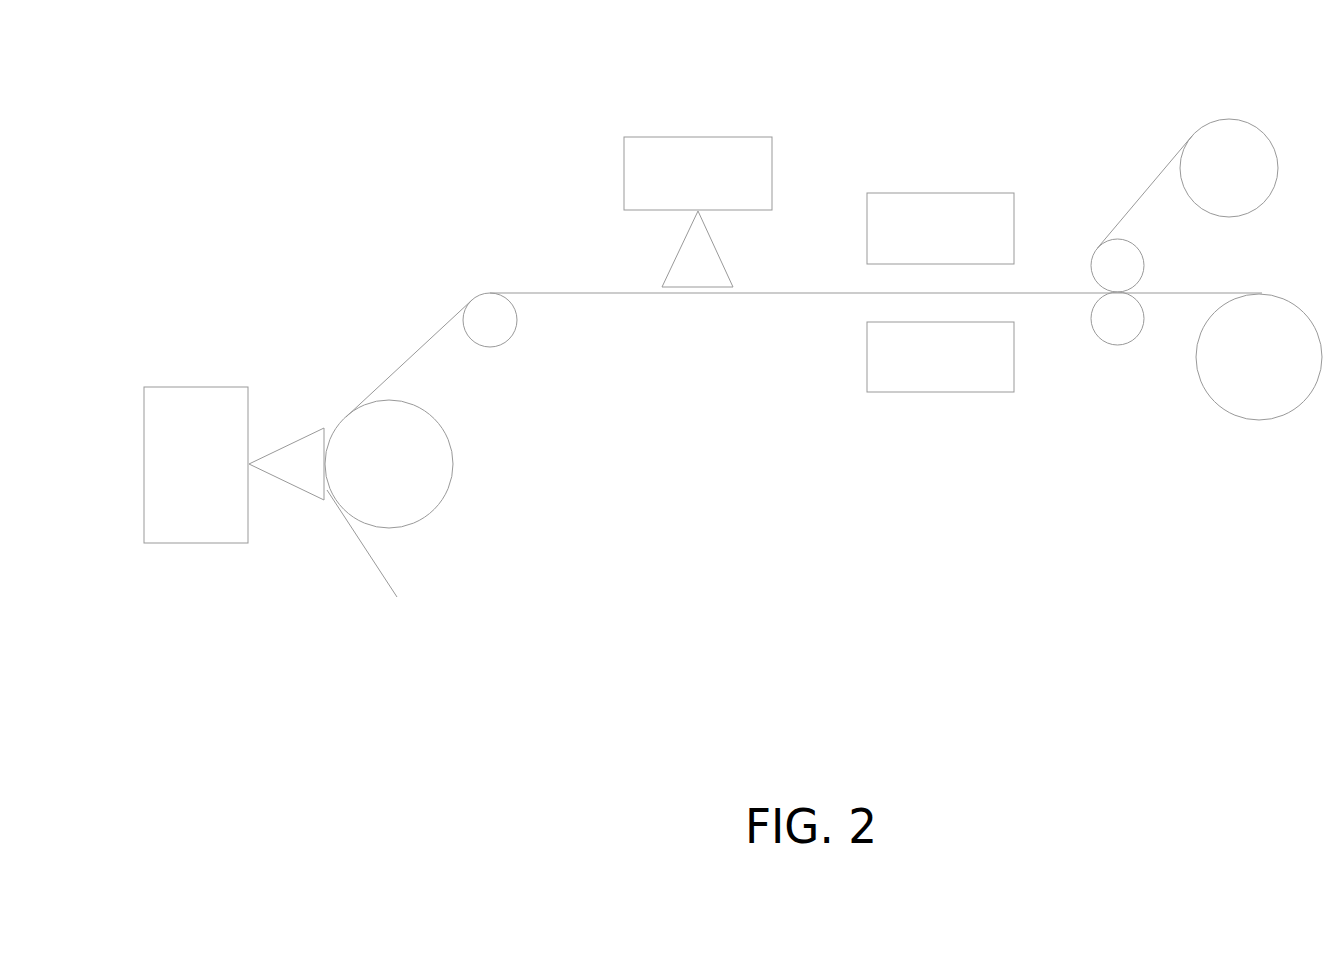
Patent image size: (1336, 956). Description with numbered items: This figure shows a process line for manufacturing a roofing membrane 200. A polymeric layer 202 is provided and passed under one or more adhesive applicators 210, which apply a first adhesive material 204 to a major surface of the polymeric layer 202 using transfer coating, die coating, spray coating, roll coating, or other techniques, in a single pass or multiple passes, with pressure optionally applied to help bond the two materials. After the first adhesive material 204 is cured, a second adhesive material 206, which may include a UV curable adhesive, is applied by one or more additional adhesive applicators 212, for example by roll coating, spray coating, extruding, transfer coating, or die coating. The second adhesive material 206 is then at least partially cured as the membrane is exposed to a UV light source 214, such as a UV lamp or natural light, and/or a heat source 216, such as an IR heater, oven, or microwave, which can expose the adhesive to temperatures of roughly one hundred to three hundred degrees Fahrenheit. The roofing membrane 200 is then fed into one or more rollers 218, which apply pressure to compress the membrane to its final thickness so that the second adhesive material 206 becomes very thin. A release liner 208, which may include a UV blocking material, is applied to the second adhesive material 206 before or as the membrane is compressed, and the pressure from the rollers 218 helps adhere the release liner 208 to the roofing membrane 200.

The roofing membrane 200 is at (1179, 292).
The polymeric layer 202 is at (369, 555).
The first adhesive material 204 is at (284, 448).
The second adhesive material 206 is at (678, 253).
The release liner 208 is at (1155, 180).
The adhesive applicators 210 is at (198, 386).
The additional adhesive applicators 212 is at (689, 137).
The UV light source 214 is at (925, 193).
The heat source 216 is at (1117, 345).
The rollers 218 is at (1280, 420).